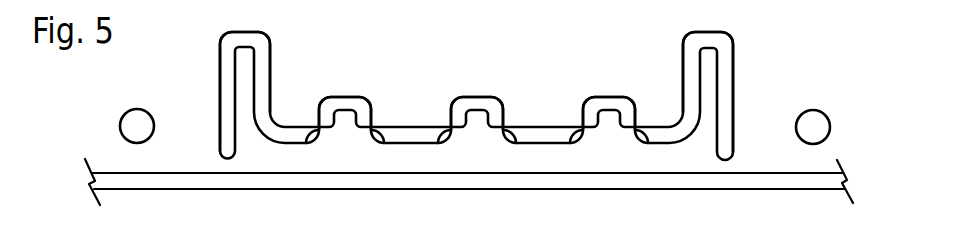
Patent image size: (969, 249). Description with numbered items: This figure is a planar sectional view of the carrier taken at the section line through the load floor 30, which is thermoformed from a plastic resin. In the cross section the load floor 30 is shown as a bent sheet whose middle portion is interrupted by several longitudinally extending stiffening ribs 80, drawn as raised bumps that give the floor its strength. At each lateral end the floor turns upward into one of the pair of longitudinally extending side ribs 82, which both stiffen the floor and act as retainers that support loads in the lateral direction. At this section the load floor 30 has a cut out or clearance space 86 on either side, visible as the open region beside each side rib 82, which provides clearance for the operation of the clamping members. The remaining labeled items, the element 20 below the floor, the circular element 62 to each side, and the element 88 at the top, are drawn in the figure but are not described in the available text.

The base plate 20 is at (463, 186).
The load floor 30 is at (290, 125).
The rod 62 is at (135, 109).
The stiffening ribs 80 is at (343, 94).
The side ribs 82 is at (265, 33).
The clearance space 86 is at (187, 132).
The opening 88 is at (465, 5).